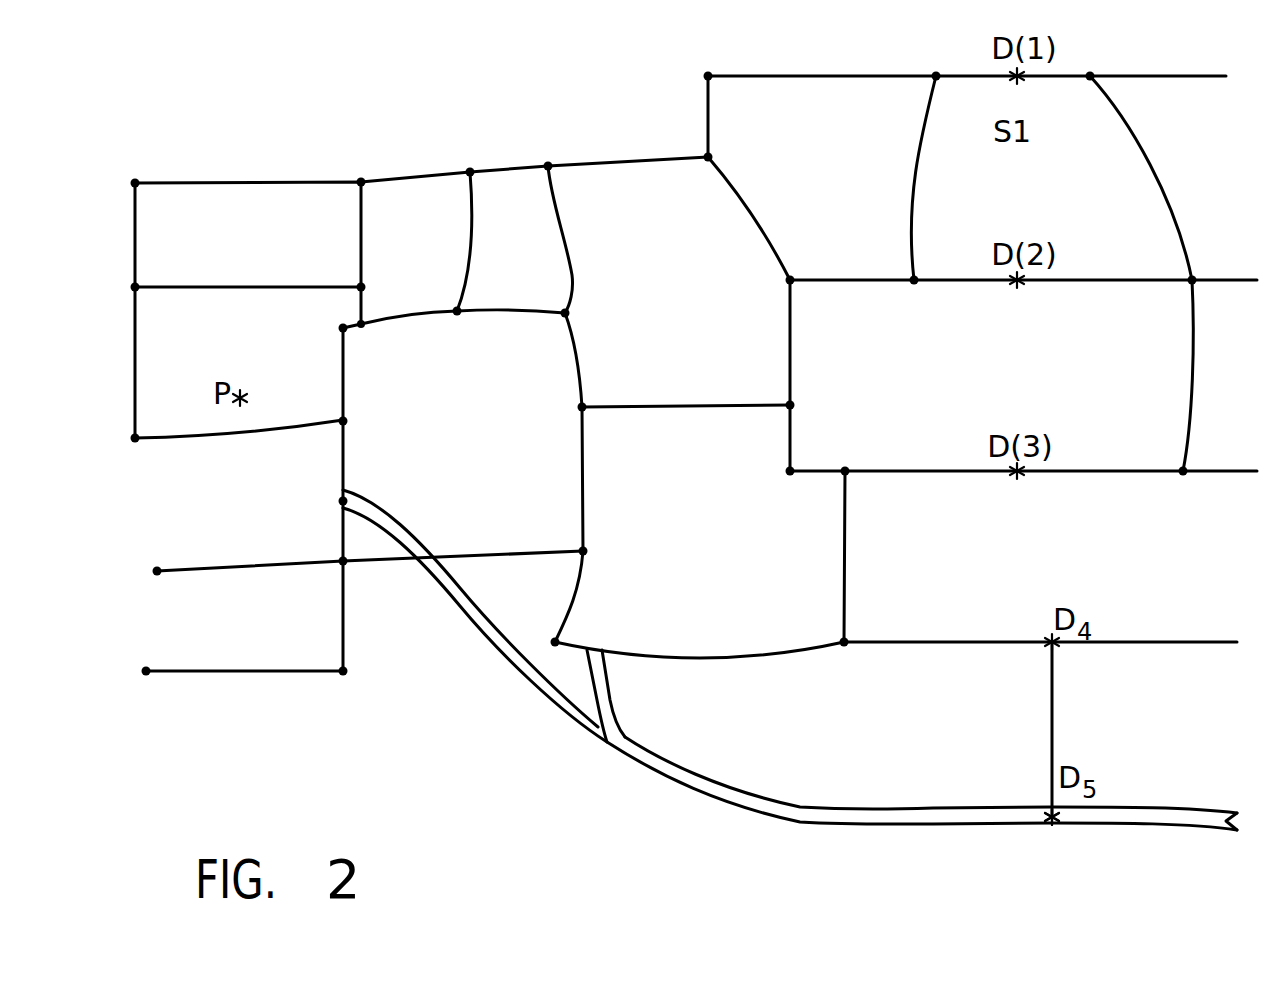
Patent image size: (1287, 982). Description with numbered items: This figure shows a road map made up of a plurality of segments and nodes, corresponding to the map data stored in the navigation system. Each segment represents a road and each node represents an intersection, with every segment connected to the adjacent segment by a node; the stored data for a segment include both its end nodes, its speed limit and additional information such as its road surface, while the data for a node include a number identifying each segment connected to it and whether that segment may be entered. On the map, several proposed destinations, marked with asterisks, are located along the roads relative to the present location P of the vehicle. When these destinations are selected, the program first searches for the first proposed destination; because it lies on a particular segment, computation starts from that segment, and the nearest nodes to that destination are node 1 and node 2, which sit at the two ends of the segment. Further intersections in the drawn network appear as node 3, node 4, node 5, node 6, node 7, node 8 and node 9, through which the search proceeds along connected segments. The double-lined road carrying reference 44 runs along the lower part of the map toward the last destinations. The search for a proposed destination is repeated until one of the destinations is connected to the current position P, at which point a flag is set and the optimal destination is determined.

The node 1 is at (936, 74).
The node 2 is at (1091, 74).
The node 3 is at (914, 283).
The node 4 is at (1192, 283).
The node 5 is at (845, 468).
The node 6 is at (1183, 474).
The node 7 is at (846, 645).
The node 8 is at (1055, 822).
The node 9 is at (603, 740).
The main road (double-line road) 44 is at (790, 827).